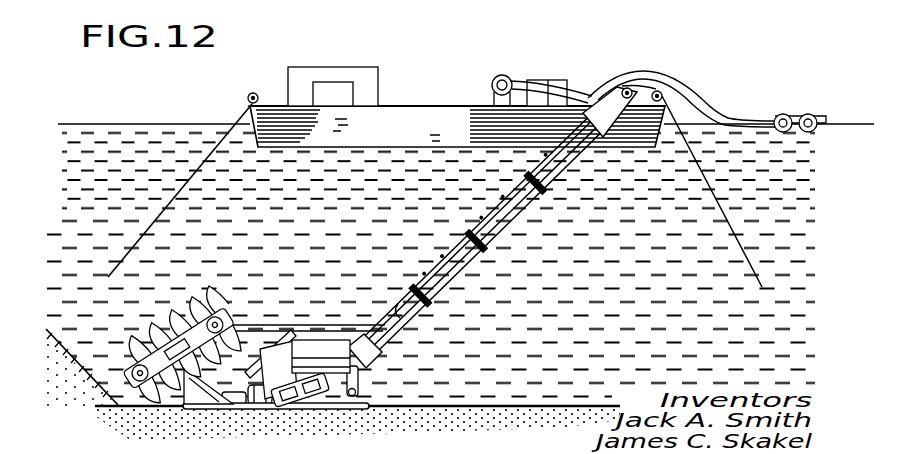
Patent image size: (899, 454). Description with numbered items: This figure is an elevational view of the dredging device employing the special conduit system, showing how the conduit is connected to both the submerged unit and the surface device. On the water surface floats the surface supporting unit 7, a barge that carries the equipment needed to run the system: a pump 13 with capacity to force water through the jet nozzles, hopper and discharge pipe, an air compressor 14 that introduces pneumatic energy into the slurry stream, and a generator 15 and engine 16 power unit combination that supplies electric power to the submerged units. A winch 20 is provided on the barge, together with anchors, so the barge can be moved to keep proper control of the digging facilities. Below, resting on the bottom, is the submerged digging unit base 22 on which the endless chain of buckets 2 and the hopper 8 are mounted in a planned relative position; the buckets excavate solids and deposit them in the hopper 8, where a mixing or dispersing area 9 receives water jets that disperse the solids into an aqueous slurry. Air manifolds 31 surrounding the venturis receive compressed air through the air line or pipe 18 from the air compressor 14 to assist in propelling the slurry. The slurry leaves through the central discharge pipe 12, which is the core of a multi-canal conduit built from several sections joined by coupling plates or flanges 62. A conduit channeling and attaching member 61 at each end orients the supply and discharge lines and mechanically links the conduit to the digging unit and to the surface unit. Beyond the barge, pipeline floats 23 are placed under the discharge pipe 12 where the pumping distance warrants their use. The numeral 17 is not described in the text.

The endless chain of buckets 2 is at (132, 389).
The surface supporting unit 7 is at (393, 117).
The hopper 8 is at (271, 364).
The mixing or dispersing area 9 is at (300, 390).
The discharge pipe 12 is at (700, 92).
The pump 13 is at (497, 78).
The air compressor 14 is at (541, 79).
The generator 15 is at (330, 70).
The engine 16 is at (342, 92).
The hose line 17 is at (522, 79).
The air line or pipe 18 is at (587, 78).
The winch 20 is at (249, 97).
The submerged digging unit base 22 is at (312, 412).
The pipeline floats 23 is at (806, 113).
The air manifold 31 is at (321, 356).
The conduit channeling and attaching member 61 is at (629, 89).
The coupling plates or flanges 62 is at (483, 248).